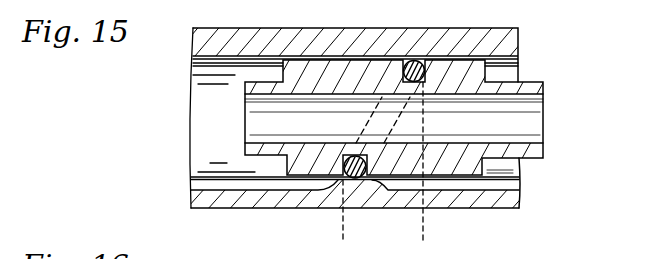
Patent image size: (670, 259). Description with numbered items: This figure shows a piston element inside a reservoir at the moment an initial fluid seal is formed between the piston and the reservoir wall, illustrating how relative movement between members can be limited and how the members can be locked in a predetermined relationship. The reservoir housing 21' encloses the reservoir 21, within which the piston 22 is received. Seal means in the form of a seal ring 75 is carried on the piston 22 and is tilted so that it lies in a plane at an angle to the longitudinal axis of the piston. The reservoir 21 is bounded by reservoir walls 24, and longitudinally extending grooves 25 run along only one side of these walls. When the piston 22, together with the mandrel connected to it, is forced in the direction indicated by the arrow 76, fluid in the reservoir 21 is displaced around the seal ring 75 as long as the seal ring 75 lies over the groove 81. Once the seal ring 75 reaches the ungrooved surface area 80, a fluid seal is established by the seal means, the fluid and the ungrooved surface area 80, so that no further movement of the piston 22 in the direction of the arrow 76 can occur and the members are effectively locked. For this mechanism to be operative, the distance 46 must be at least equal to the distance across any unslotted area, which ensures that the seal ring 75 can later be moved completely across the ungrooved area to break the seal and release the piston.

The reservoir 21 is at (215, 118).
The reservoir housing 21' is at (321, 117).
The piston 22 is at (362, 58).
The reservoir walls 24 is at (227, 162).
The longitudinally extending grooves 25 is at (507, 198).
The distance 46 is at (416, 234).
The seal ring 75 is at (423, 58).
The arrow 76 is at (570, 123).
The ungrooved surface area 80 is at (333, 180).
The groove 81 is at (459, 185).